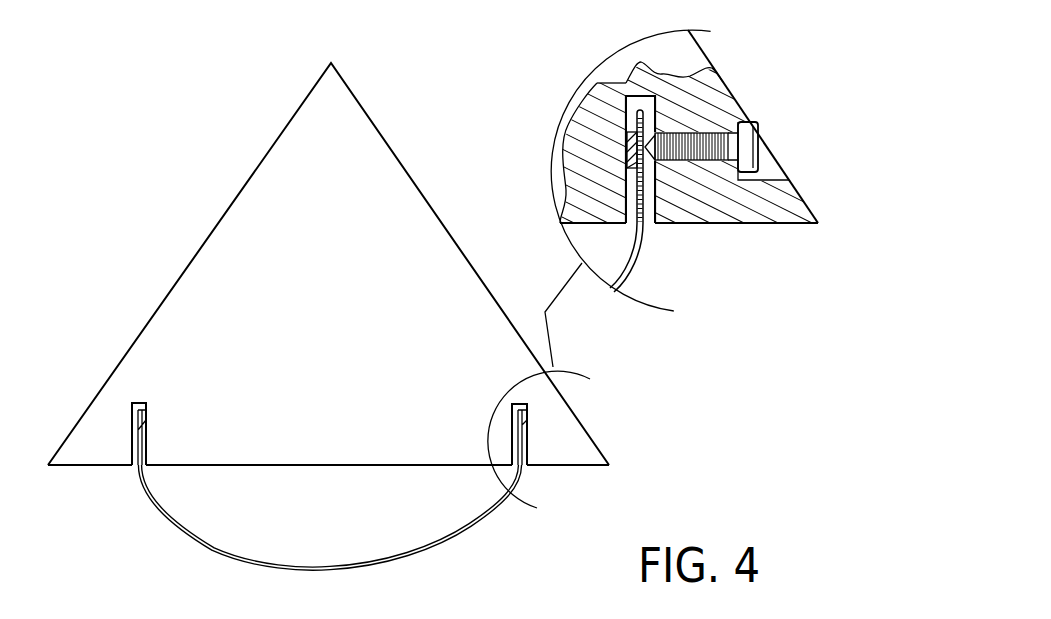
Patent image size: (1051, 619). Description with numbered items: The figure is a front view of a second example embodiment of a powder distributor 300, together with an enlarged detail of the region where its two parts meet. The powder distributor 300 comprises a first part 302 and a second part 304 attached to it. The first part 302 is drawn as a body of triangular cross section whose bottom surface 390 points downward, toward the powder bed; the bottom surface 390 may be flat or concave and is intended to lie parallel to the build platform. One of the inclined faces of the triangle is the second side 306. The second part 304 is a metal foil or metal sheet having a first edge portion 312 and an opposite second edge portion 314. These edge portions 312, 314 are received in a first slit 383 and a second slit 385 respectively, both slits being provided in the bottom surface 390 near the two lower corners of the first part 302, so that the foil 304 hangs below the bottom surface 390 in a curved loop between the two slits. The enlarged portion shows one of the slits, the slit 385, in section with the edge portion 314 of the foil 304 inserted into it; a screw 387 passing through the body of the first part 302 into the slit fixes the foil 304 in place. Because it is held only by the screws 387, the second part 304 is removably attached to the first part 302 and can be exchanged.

The powder distributor 300 is at (158, 148).
The first part 302 is at (228, 318).
The second part 304 is at (463, 536).
The second side 306 is at (725, 88).
The first edge portion 312 is at (132, 407).
The second edge portion 314 is at (535, 393).
The first slit 383 is at (131, 445).
The second slit 385 is at (527, 450).
The screw 387 is at (749, 147).
The bottom surface 390 is at (292, 466).